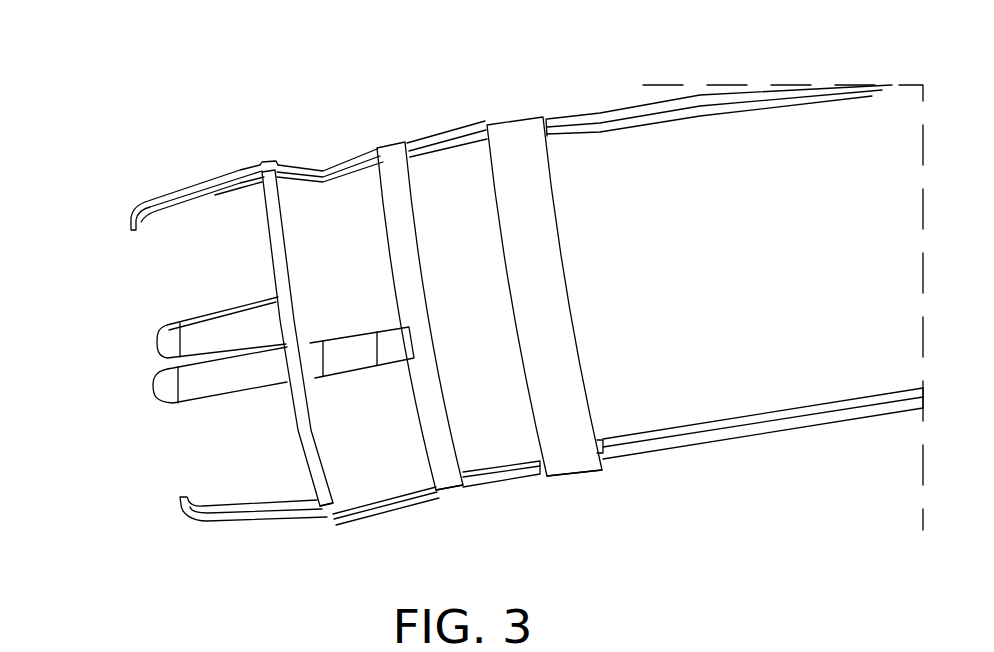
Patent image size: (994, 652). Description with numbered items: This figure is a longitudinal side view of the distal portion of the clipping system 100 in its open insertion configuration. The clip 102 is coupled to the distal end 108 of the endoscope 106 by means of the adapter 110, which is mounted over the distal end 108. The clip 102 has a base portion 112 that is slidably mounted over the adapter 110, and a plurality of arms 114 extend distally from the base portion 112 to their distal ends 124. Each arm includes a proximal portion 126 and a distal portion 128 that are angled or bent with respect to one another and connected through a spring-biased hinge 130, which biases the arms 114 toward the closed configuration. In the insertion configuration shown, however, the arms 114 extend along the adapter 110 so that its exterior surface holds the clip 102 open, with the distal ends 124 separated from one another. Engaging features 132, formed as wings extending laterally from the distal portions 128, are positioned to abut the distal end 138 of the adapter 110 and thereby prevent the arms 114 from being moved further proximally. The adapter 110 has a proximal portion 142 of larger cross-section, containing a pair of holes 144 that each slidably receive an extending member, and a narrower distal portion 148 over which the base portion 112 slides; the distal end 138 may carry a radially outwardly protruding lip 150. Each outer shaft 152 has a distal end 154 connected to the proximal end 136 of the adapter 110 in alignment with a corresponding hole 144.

The clipping system 100 is at (428, 106).
The clip 102 is at (210, 151).
The endoscope 106 is at (714, 143).
The distal end of the endoscope 108 is at (607, 160).
The adapter 110 is at (315, 212).
The base portion 112 is at (450, 475).
The arms 114 is at (210, 520).
The distal ends of the arms 124 is at (172, 340).
The proximal portion of the arm 126 is at (321, 168).
The distal portion of the arm 128 is at (192, 190).
The hinge 130 is at (290, 160).
The engaging features 132 is at (237, 188).
The proximal end of the adapter 136 is at (565, 452).
The distal end of the adapter 138 is at (327, 447).
The proximal portion of the adapter 142 is at (513, 150).
The holes 144 is at (546, 137).
The distal portion of the adapter 148 is at (387, 450).
The lip 150 is at (322, 492).
The outer shaft 152 is at (633, 110).
The distal end of the outer shaft 154 is at (620, 452).